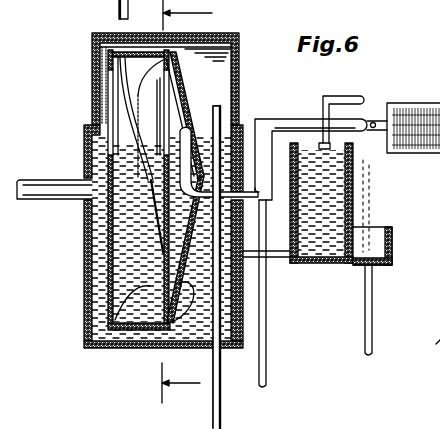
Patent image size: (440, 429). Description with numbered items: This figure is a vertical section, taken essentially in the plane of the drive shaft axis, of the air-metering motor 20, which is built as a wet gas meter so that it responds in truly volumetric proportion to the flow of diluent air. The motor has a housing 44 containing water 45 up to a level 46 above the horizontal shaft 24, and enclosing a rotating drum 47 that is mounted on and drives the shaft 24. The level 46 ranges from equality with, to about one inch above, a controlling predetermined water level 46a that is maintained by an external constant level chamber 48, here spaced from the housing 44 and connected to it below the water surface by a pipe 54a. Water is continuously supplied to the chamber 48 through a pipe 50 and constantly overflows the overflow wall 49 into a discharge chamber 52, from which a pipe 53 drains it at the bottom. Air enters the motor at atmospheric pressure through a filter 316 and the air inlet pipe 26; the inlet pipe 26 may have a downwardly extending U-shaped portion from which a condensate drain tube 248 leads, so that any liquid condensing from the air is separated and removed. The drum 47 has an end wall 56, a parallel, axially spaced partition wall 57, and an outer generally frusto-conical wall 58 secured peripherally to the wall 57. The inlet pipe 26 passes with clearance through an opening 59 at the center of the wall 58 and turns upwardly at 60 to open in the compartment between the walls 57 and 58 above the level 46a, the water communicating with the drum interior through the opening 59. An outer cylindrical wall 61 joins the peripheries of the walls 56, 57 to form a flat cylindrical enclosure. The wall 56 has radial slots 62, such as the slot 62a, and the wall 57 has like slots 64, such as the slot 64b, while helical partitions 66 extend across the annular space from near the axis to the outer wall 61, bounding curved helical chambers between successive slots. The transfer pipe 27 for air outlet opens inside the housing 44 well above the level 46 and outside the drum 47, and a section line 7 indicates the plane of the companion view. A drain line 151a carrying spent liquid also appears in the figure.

The spent liquid drain line 151a is at (118, 7).
The section line 7- 7 is at (187, 205).
The housing 44 is at (205, 33).
The rotating wheel or drum 47 is at (110, 59).
The radial slot 62a is at (108, 90).
The water level 46 is at (108, 127).
The radial slots 62 is at (92, 127).
The predetermined water level 46a is at (118, 160).
The shaft 24 is at (51, 180).
The end wall 56 is at (111, 268).
The partitions 66 is at (133, 272).
The air-metering motor 20 is at (77, 322).
The outer cylindrical wall 61 is at (160, 287).
The partition wall 57 is at (185, 273).
The frusto-conical wall 58 is at (190, 305).
The transfer pipe 27 is at (222, 417).
The condensate drain tube 248 is at (267, 337).
The connecting pipe 54a is at (281, 259).
The constant level chamber 48 is at (326, 265).
The overflow wall 49 is at (348, 194).
The discharge chamber 52 is at (393, 254).
The drain pipe 53 is at (373, 325).
The water 45 is at (439, 344).
The opening 59 is at (270, 201).
The air inlet pipe 26 is at (293, 119).
The water supply pipe 50 is at (366, 94).
The filter 316 is at (428, 103).
The slot in partition wall 64b is at (168, 85).
The slots 64 is at (170, 97).
The upturned pipe end 60 is at (176, 126).